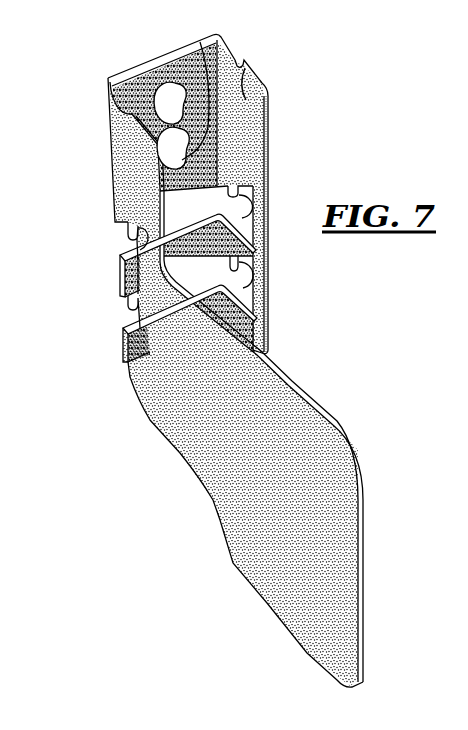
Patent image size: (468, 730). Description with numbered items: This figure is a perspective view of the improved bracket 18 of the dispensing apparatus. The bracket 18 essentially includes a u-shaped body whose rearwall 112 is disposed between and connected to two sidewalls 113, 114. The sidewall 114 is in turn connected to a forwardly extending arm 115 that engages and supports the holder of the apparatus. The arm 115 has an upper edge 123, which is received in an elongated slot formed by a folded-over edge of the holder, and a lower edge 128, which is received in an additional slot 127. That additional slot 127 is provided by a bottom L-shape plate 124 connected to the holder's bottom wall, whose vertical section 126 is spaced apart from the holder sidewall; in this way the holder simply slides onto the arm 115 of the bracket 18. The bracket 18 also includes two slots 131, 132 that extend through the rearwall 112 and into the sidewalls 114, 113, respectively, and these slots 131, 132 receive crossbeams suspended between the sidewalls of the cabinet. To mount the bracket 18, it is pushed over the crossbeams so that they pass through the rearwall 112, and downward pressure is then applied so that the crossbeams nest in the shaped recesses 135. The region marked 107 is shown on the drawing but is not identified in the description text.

The bracket 18 is at (234, 343).
The bend region 107 is at (184, 45).
The rearwall 112 is at (170, 62).
The sidewall 113 is at (245, 68).
The sidewall 114 is at (132, 154).
The forwardly extending arm 115 is at (267, 385).
The upper edge 123 is at (288, 390).
The bottom L-shape plate 124 is at (401, 0).
The vertical section 126 is at (341, 11).
The additional slot 127 is at (274, 6).
The lower edge 128 is at (267, 603).
The slot 131 is at (118, 247).
The slot 132 is at (110, 315).
The shaped recesses 135 is at (125, 240).